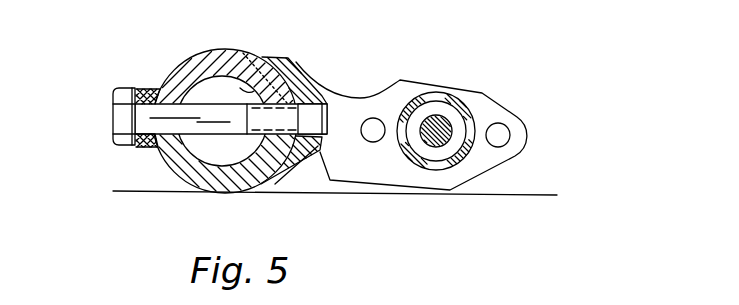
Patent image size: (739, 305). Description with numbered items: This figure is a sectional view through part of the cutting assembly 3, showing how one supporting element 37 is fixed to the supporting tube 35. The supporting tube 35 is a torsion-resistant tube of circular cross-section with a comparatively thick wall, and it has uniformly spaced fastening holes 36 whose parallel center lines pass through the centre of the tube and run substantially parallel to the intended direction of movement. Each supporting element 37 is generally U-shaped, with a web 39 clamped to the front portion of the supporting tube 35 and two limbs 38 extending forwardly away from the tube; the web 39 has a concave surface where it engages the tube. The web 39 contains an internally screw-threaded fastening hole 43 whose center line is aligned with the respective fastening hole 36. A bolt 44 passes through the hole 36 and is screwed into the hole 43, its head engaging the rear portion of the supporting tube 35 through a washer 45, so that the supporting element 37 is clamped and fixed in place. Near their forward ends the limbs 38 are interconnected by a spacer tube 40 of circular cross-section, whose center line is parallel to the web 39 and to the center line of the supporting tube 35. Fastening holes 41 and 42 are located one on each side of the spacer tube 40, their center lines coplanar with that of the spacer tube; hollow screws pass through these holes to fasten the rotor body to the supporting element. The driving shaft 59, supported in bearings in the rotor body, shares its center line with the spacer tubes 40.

The cutting assembly 3 is at (207, 52).
The supporting tube 35 is at (184, 70).
The fastening hole 36 is at (196, 95).
The supporting element 37 is at (407, 81).
The limb 38 is at (353, 178).
The web 39 is at (272, 75).
The spacer tube 40 is at (452, 100).
The fastening hole 41 is at (373, 140).
The fastening hole 42 is at (503, 132).
The fastening hole 43 is at (330, 117).
The bolt 44 is at (114, 95).
The washer 45 is at (153, 147).
The driving shaft 59 is at (433, 143).